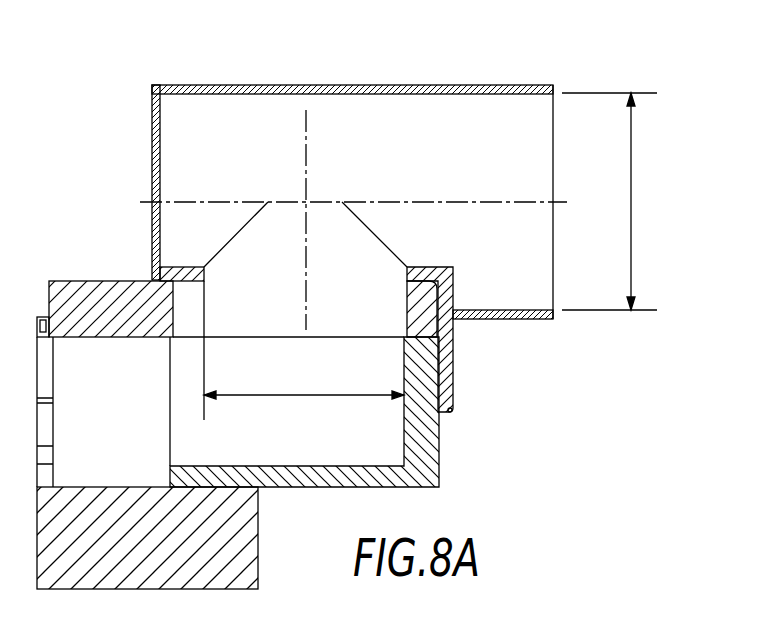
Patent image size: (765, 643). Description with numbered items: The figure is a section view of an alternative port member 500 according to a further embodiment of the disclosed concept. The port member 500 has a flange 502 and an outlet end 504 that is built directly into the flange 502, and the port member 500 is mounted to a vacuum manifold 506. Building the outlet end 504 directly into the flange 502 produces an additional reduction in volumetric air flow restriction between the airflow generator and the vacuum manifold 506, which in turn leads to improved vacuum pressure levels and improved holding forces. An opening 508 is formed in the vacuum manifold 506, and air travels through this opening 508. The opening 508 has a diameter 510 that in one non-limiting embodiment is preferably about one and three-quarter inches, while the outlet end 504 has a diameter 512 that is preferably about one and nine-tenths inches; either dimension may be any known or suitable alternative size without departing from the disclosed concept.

The port member 500 is at (171, 86).
The flange 502 is at (455, 343).
The outlet end 504 is at (553, 86).
The vacuum manifold 506 is at (93, 281).
The opening 508 is at (330, 318).
The diameter 510 is at (285, 394).
The diameter 512 is at (633, 184).